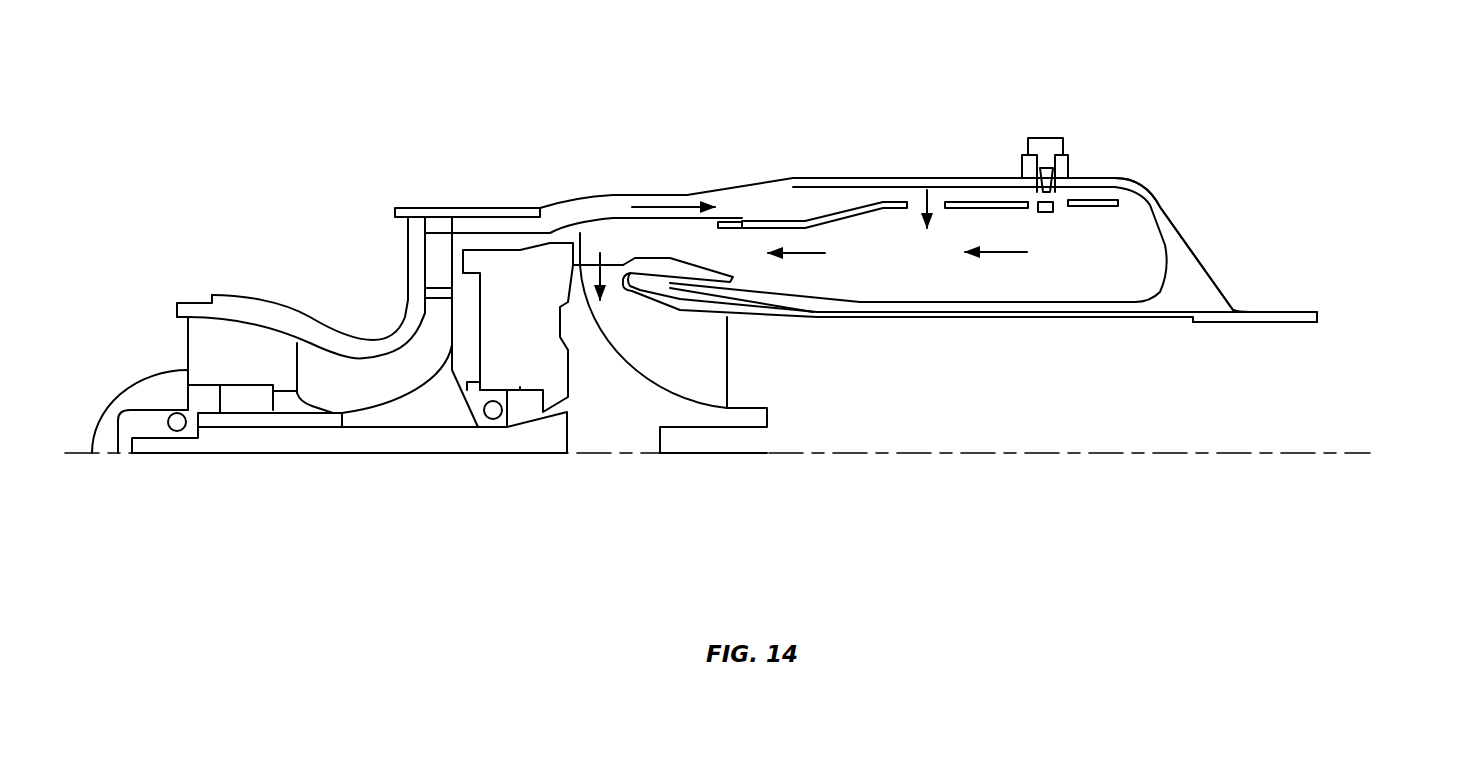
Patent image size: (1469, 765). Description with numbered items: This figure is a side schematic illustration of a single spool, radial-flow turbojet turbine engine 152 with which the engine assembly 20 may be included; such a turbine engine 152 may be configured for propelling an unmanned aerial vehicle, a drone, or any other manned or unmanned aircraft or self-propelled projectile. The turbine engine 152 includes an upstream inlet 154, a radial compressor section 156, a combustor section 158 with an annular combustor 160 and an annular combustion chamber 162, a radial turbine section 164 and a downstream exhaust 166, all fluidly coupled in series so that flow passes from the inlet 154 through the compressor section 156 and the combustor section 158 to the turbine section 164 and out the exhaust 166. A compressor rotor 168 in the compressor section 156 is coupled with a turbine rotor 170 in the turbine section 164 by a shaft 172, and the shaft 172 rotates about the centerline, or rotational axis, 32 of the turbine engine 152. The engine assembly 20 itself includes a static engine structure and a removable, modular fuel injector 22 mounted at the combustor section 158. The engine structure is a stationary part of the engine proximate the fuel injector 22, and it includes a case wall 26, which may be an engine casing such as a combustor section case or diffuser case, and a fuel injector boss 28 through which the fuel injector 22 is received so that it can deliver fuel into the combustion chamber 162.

The engine assembly 20 is at (1110, 122).
The fuel injector 22 is at (1050, 128).
The case wall 26 is at (1192, 236).
The fuel injector boss 28 is at (1070, 163).
The centerline 32 is at (1362, 454).
The turbine engine 152 is at (1208, 106).
The upstream inlet 154 is at (186, 343).
The compressor section 156 is at (408, 478).
The combustor section 158 is at (918, 160).
The combustor 160 is at (975, 195).
The combustion chamber 162 is at (910, 284).
The turbine section 164 is at (661, 485).
The downstream exhaust 166 is at (1335, 376).
The compressor rotor 168 is at (430, 415).
The turbine rotor 170 is at (696, 417).
The shaft 172 is at (327, 457).